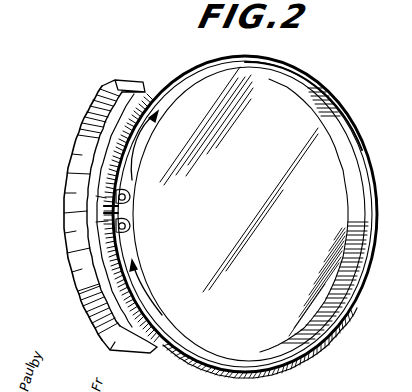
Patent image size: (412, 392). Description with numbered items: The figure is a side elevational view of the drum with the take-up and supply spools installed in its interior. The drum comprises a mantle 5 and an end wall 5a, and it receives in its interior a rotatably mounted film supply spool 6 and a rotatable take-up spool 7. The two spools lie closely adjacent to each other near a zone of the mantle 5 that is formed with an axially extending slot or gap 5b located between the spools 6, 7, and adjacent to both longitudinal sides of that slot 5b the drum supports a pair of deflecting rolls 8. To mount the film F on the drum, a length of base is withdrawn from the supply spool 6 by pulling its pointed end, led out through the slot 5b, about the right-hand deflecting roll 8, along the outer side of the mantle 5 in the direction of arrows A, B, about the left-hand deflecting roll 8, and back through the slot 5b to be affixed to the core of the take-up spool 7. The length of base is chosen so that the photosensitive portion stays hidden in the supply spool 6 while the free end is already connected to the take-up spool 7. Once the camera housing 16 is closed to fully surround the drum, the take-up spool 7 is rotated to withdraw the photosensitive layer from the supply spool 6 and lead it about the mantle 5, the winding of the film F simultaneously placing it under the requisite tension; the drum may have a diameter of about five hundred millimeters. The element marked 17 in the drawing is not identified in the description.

The mantle 5 is at (353, 282).
The end wall 5a is at (303, 299).
The slot or gap 5b is at (119, 208).
The film supply spool 6 is at (128, 191).
The take-up spool 7 is at (129, 232).
The deflecting rolls 8 is at (108, 198).
The housing 16 is at (86, 130).
The retaining band 17 is at (162, 357).
The film F is at (112, 273).
The arrow A is at (142, 139).
The arrow B is at (148, 298).